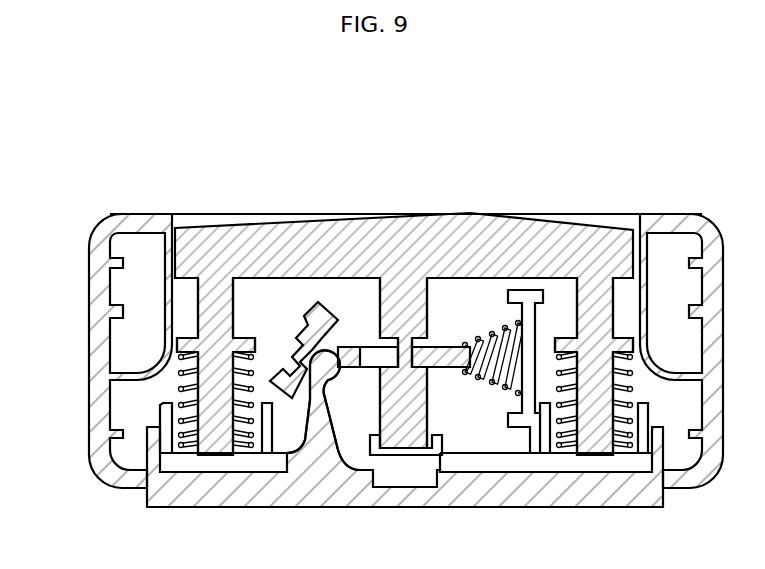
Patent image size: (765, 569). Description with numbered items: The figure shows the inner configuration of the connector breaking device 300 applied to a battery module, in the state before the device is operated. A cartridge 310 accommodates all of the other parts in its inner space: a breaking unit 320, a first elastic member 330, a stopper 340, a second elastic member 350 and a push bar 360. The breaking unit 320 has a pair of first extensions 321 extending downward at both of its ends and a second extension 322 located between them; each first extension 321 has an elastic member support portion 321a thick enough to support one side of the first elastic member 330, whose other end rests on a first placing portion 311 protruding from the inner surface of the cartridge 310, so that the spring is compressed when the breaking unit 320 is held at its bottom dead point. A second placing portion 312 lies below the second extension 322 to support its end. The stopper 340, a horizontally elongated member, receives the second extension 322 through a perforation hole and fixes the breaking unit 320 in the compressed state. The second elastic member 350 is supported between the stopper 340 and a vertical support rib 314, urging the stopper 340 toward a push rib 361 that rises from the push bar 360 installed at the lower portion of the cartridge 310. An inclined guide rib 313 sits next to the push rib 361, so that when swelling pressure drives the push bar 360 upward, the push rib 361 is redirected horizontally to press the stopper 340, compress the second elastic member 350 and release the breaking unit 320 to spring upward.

The connector breaking device 300 is at (205, 141).
The cartridge 310 is at (89, 267).
The first placing portion 311 is at (163, 418).
The second placing portion 312 is at (401, 450).
The guide rib 313 is at (328, 310).
The support rib 314 is at (527, 297).
The breaking unit 320 is at (590, 236).
The first extension 321 is at (207, 305).
The elastic member support portion 321a is at (181, 343).
The second extension 322 is at (403, 307).
The first elastic member 330 is at (181, 382).
The stopper 340 is at (446, 352).
The second elastic member 350 is at (492, 330).
The push bar 360 is at (194, 508).
The push rib 361 is at (316, 397).